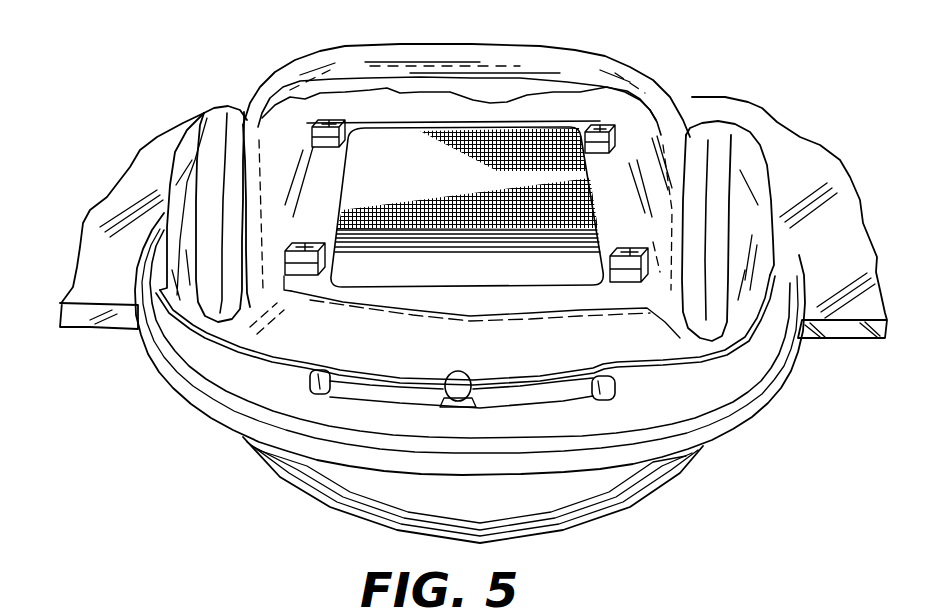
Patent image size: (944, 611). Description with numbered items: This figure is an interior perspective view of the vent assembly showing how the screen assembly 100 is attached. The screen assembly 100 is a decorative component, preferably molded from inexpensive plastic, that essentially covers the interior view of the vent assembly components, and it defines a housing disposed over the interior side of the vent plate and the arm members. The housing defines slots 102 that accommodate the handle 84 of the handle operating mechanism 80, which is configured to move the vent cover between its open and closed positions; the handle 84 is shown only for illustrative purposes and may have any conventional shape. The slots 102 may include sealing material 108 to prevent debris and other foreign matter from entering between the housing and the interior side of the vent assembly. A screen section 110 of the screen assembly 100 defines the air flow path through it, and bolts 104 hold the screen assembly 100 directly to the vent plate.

The handle operating mechanism 80 is at (559, 43).
The screen assembly 100 is at (303, 343).
The slots 102 is at (712, 167).
The bolts 104 is at (463, 381).
The sealing material 108 is at (220, 153).
The screen section 110 is at (406, 272).
The handle 84 is at (716, 600).